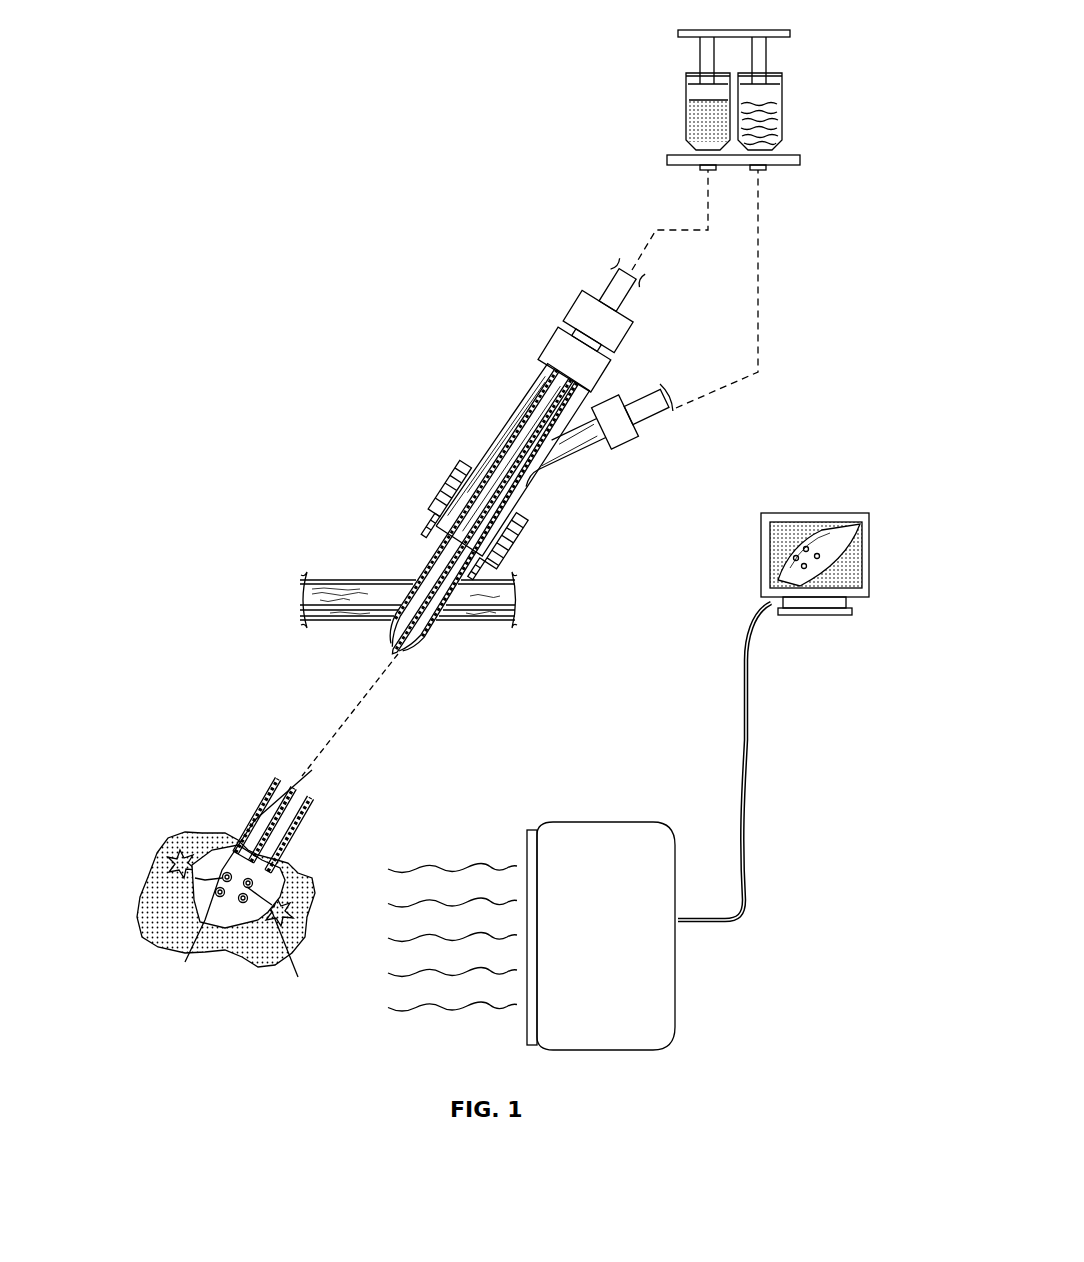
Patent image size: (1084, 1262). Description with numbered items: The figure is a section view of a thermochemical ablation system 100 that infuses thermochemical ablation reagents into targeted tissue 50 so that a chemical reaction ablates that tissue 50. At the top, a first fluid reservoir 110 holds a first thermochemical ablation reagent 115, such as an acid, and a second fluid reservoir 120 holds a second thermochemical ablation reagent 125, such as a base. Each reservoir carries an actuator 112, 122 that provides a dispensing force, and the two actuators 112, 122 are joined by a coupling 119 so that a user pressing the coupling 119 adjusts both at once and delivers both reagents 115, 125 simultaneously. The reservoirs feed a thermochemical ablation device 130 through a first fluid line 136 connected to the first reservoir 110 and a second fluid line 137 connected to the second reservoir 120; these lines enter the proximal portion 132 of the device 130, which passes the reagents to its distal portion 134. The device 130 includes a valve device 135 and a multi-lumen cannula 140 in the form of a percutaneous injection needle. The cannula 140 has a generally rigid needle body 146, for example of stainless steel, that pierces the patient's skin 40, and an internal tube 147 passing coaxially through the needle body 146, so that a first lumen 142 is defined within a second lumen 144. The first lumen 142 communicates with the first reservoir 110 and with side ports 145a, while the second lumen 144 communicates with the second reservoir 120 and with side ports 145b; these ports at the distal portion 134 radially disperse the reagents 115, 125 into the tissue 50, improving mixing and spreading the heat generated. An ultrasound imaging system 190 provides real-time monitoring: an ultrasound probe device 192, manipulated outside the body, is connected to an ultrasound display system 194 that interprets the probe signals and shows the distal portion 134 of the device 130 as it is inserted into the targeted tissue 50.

The thermochemical ablation system 100 is at (316, 122).
The first fluid reservoir 110 is at (683, 110).
The first actuator 112 is at (706, 64).
The first thermochemical ablation reagent 115 is at (694, 128).
The coupling 119 is at (707, 30).
The second fluid reservoir 120 is at (786, 117).
The second actuator 122 is at (760, 62).
The second thermochemical ablation reagent 125 is at (782, 130).
The thermochemical ablation device 130 is at (490, 513).
The proximal portion 132 is at (586, 341).
The distal portion 134 is at (362, 808).
The valve device 135 is at (507, 469).
The first fluid line 136 is at (620, 286).
The second fluid line 137 is at (648, 410).
The multi-lumen cannula 140 is at (481, 515).
The first lumen 142 is at (482, 517).
The second lumen 144 is at (492, 519).
The needle body 146 is at (474, 507).
The internal tube 147 is at (388, 651).
The side ports 145a is at (224, 874).
The side ports 145b is at (262, 920).
The skin 40 is at (328, 578).
The targeted tissue 50 is at (155, 940).
The ultrasound imaging system 190 is at (817, 541).
The ultrasound probe device 192 is at (592, 832).
The ultrasound display system 194 is at (760, 558).